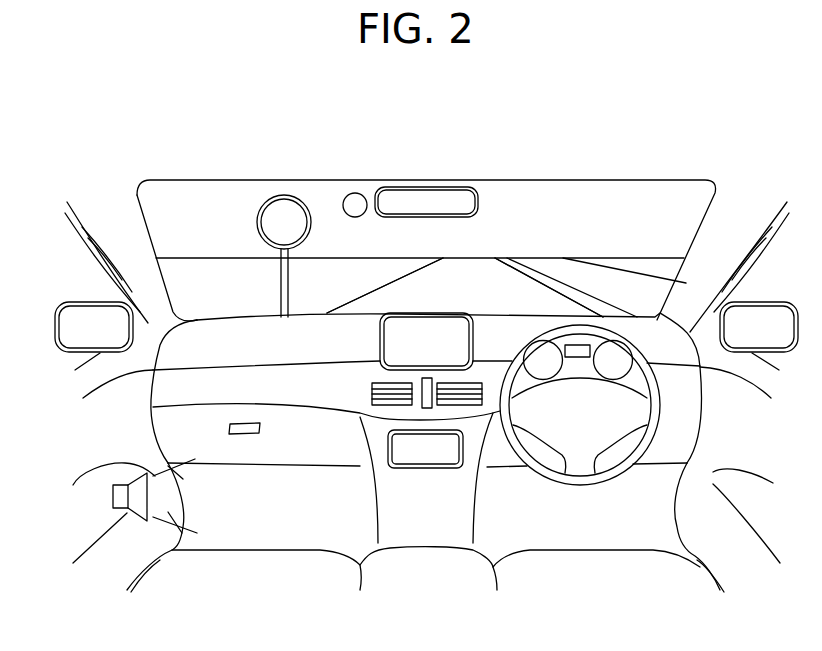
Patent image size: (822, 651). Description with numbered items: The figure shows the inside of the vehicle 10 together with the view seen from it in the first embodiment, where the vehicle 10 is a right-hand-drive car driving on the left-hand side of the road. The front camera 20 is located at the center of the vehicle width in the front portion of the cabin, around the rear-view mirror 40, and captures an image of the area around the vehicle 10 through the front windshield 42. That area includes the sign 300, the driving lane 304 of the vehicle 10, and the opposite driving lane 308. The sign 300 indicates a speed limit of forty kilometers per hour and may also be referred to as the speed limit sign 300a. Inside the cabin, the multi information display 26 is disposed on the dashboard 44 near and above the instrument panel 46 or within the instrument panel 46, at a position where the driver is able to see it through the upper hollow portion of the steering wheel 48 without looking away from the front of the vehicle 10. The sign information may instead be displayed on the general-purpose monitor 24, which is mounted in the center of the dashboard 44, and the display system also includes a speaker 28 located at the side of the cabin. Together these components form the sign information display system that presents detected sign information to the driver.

The vehicle 10 is at (697, 117).
The front camera 20 is at (355, 191).
The general-purpose monitor 24 is at (397, 338).
The multi information display 26 is at (582, 344).
The speaker 28 is at (112, 497).
The rear-view mirror 40 is at (430, 195).
The front windshield 42 is at (194, 188).
The dashboard 44 is at (514, 318).
The instrument panel 46 is at (577, 373).
The steering wheel 48 is at (608, 481).
The sign 300 is at (288, 205).
The speed limit sign 300a is at (284, 256).
The driving lane 304 is at (483, 266).
The opposite driving lane 308 is at (633, 282).